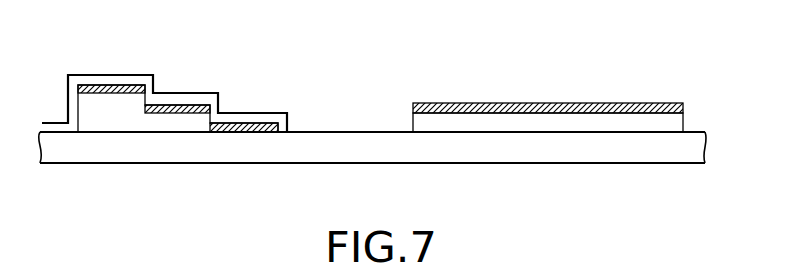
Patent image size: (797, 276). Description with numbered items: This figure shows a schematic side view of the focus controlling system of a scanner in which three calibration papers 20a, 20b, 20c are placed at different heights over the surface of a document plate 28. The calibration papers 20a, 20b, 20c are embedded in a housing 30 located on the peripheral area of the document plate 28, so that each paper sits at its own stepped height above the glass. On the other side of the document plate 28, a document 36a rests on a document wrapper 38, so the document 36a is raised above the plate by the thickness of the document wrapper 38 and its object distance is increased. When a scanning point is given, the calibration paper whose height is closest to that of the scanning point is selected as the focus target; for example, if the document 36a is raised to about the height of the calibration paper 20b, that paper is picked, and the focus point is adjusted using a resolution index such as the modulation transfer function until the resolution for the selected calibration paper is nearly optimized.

The document plate 28 is at (695, 148).
The housing 30 is at (43, 118).
The calibration paper 20a is at (238, 120).
The calibration paper 20b is at (173, 105).
The calibration paper 20c is at (108, 83).
The document 36a is at (555, 103).
The document wrapper 38 is at (677, 127).